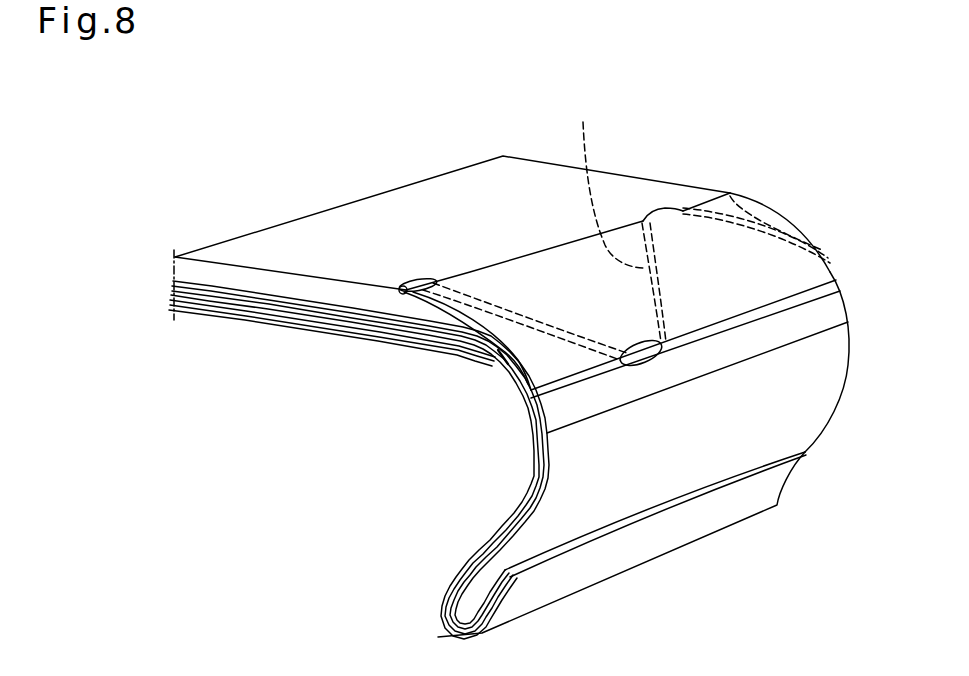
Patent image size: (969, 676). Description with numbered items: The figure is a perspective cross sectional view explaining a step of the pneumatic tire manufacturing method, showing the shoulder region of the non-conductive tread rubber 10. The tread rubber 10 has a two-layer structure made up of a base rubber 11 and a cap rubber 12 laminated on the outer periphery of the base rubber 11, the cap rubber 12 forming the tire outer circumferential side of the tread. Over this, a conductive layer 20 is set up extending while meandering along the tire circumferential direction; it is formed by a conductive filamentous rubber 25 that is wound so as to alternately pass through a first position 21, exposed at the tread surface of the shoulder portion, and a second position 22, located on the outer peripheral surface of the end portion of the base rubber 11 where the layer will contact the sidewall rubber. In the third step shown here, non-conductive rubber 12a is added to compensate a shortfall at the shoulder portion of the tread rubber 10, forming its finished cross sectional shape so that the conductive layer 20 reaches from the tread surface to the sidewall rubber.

The tread rubber 10 is at (313, 158).
The base rubber 11 is at (252, 290).
The cap rubber 12 is at (298, 224).
The non-conductive rubber 12a is at (810, 233).
The conductive layer 20 is at (598, 179).
The first position 21 is at (406, 287).
The second position 22 is at (654, 367).
The filamentous rubber 25 is at (598, 179).